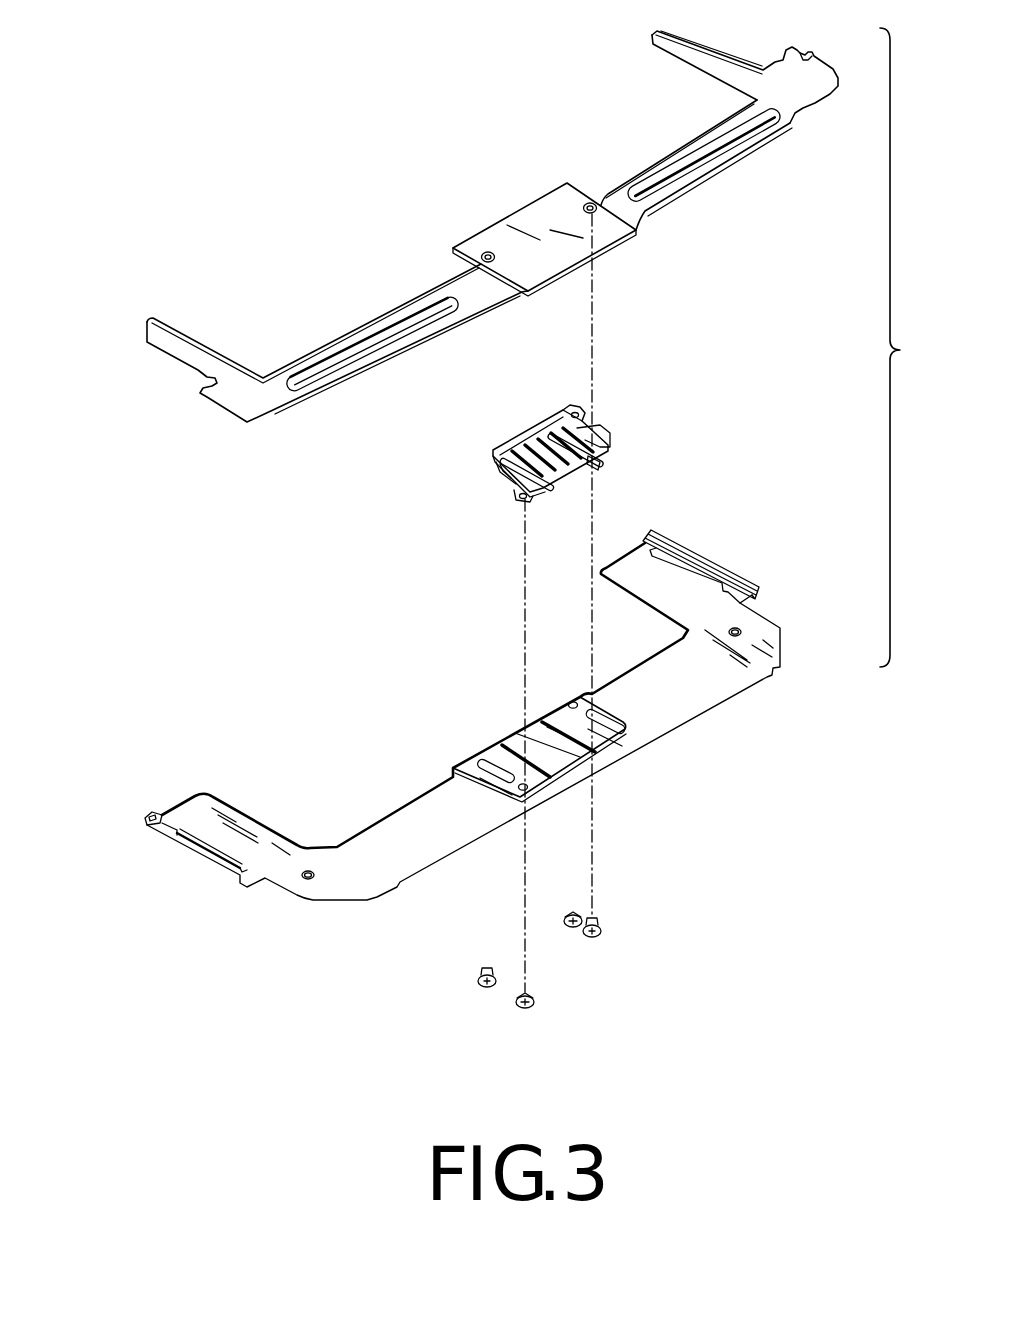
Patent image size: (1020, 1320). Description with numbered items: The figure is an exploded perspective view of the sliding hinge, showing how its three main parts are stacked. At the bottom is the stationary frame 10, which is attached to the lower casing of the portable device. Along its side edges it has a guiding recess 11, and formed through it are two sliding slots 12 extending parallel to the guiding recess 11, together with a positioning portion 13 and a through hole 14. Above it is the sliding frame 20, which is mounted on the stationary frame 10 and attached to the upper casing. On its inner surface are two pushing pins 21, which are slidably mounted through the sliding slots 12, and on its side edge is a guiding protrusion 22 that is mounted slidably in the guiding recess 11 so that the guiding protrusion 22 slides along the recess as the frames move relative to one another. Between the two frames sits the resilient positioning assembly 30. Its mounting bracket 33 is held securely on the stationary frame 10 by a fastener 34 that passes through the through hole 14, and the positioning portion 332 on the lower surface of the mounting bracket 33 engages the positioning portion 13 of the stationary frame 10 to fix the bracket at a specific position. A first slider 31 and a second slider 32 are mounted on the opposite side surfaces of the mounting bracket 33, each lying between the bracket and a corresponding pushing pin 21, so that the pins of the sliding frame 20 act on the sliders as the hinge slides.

The stationary frame 10 is at (435, 852).
The guiding recess 11 is at (697, 560).
The sliding slot 12 is at (614, 729).
The positioning portion 13 is at (595, 748).
The through hole 14 is at (568, 697).
The sliding frame 20 is at (552, 208).
The pushing pin 21 is at (485, 987).
The guiding protrusion 22 is at (690, 50).
The resilient positioning assembly 30 is at (527, 400).
The first slider 31 is at (503, 480).
The second slider 32 is at (603, 437).
The mounting bracket 33 is at (527, 443).
The positioning portion 332 is at (596, 464).
The fastener 34 is at (527, 1008).